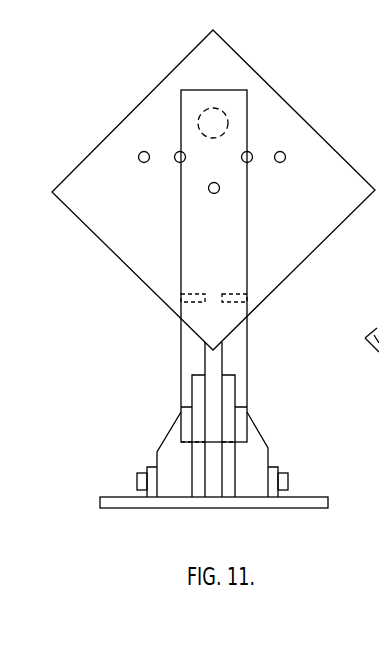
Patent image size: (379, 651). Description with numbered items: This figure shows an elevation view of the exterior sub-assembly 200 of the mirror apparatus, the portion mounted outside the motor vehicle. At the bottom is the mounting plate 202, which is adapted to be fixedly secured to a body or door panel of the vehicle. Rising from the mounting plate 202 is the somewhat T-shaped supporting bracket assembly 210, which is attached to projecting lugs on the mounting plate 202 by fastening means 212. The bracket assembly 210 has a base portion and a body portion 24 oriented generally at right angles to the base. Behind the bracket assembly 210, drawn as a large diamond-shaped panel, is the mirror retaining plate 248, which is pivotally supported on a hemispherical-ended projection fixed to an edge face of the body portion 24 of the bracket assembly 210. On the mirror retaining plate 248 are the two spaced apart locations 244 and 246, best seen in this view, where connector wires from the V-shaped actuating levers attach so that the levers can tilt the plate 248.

The mirror retaining plate 248 is at (307, 120).
The post 24 is at (248, 321).
The spaced apart location 246 is at (178, 162).
The spaced apart location 244 is at (249, 161).
The supporting bracket assembly 210 is at (240, 386).
The exterior sub-assembly 200 is at (172, 410).
The fastening means 212 is at (289, 480).
The mounting plate 202 is at (147, 501).